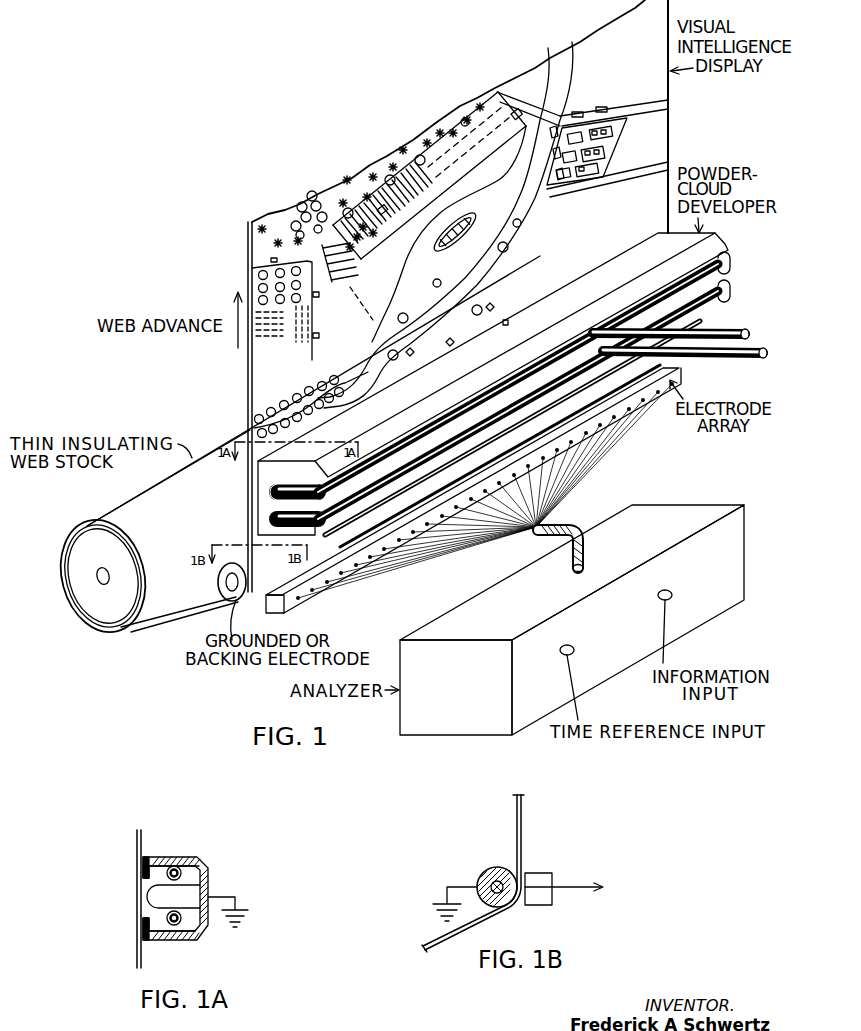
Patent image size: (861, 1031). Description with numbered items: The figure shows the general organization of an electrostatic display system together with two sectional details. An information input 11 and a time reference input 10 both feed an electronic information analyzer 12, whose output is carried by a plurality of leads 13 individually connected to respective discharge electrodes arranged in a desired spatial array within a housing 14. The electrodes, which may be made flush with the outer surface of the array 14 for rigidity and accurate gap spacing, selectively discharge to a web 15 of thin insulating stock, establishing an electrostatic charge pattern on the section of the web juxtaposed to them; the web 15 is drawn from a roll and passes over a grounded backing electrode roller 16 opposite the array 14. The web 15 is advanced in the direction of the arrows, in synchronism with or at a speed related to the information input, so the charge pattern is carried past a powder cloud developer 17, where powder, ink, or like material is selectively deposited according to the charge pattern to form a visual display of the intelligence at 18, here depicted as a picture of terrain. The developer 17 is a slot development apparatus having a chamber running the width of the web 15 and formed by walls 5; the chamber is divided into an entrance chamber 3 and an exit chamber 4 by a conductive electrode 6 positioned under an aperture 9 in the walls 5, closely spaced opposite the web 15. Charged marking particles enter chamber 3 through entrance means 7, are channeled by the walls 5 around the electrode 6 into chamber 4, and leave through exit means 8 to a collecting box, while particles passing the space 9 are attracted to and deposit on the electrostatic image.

In FIG. 1A, the entrance chamber 3 is at (198, 920).
In FIG. 1A, the exit chamber 4 is at (167, 866).
In FIG. 1A, the walls 5 is at (187, 857).
In FIG. 1A, the conductive electrode 6 is at (198, 890).
In FIG. 1, the entrance means 7 is at (755, 359).
In FIG. 1A, the entrance means 7 is at (171, 924).
In FIG. 1, the exit means 8 is at (731, 331).
In FIG. 1A, the exit means 8 is at (181, 872).
In FIG. 1A, the aperture 9 is at (143, 899).
In FIG. 1, the time reference input 10 is at (572, 652).
In FIG. 1, the information input 11 is at (670, 598).
In FIG. 1, the electronic information analyzer 12 is at (451, 736).
In FIG. 1, the leads 13 is at (420, 557).
In FIG. 1B, the leads 13 is at (578, 887).
In FIG. 1, the electrode array housing 14 is at (684, 373).
In FIG. 1B, the electrode array housing 14 is at (538, 873).
In FIG. 1, the web of thin insulating stock 15 is at (164, 617).
In FIG. 1A, the web of thin insulating stock 15 is at (137, 947).
In FIG. 1B, the web of thin insulating stock 15 is at (443, 934).
In FIG. 1, the grounded backing electrode roller 16 is at (240, 600).
In FIG. 1B, the grounded backing electrode roller 16 is at (485, 872).
In FIG. 1, the powder cloud developer 17 is at (712, 246).
In FIG. 1, the visual display of the intelligence 18 is at (579, 247).